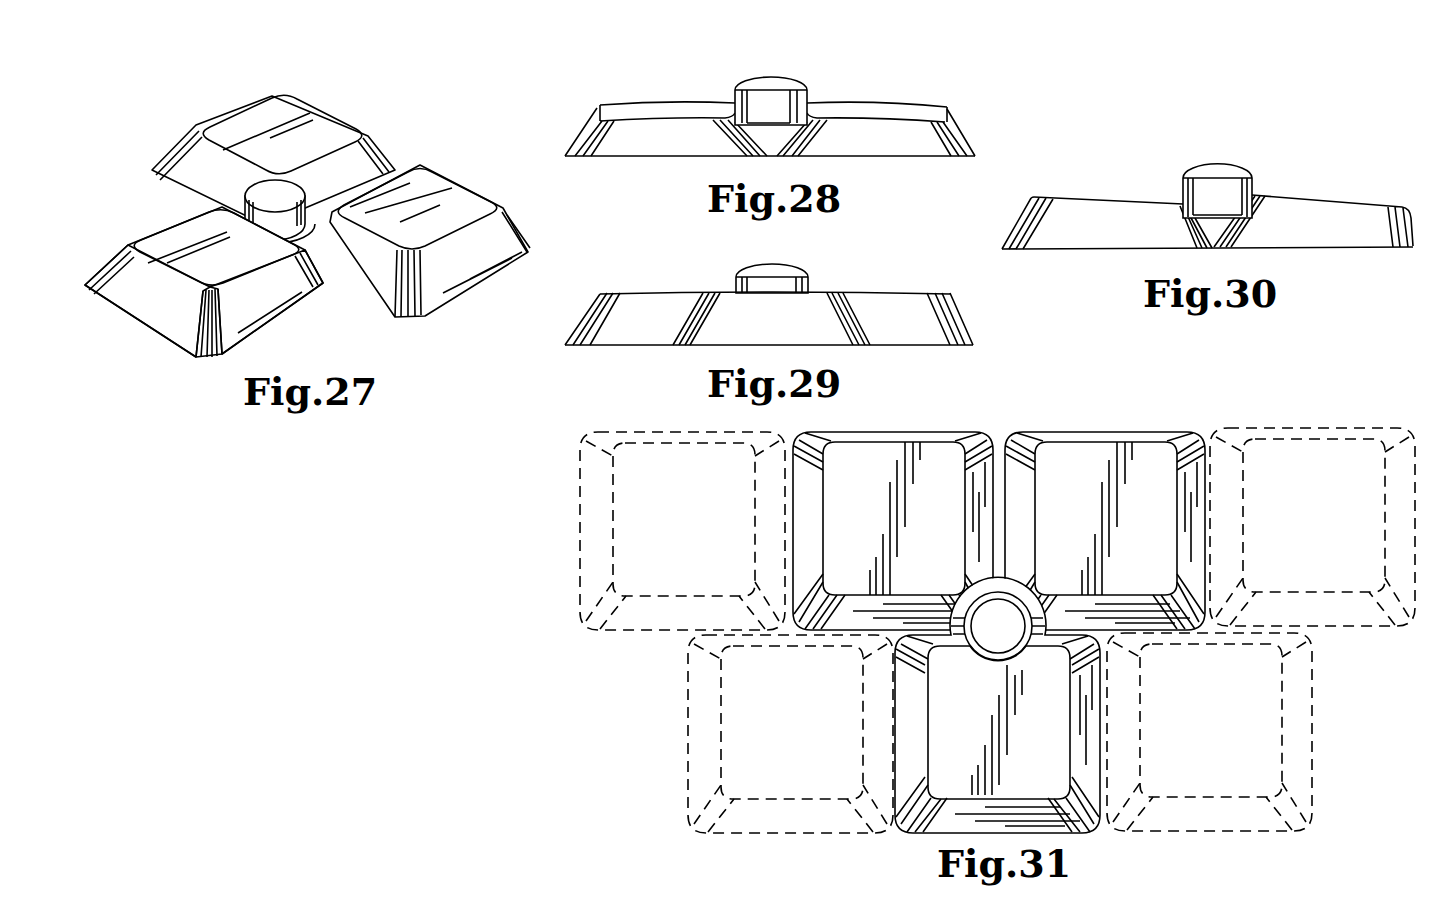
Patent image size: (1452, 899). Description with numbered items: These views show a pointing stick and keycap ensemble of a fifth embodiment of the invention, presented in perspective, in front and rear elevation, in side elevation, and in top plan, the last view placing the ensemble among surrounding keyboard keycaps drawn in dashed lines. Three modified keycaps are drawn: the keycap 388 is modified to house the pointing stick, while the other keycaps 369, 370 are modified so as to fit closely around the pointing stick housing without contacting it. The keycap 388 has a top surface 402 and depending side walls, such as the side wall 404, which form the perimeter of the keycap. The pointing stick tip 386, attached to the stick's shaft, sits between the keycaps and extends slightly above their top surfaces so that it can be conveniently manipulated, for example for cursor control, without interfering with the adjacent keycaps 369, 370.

In FIG. 27, the keycap 369 is at (332, 112).
In FIG. 28, the keycap 369 is at (915, 103).
In FIG. 29, the keycap 369 is at (650, 293).
In FIG. 31, the keycap 369 is at (922, 432).
In FIG. 27, the keycap 370 is at (457, 193).
In FIG. 28, the keycap 370 is at (655, 103).
In FIG. 29, the keycap 370 is at (908, 293).
In FIG. 31, the keycap 370 is at (1113, 432).
In FIG. 27, the pointing stick tip 386 is at (275, 211).
In FIG. 28, the pointing stick tip 386 is at (768, 78).
In FIG. 29, the pointing stick tip 386 is at (768, 265).
In FIG. 30, the pointing stick tip 386 is at (1218, 170).
In FIG. 27, the top surface 402 is at (182, 237).
In FIG. 30, the top surface 402 is at (1123, 202).
In FIG. 27, the side wall 404 is at (258, 316).
In FIG. 30, the side wall 404 is at (1047, 223).
In FIG. 27, the keycap 388 is at (152, 333).
In FIG. 30, the keycap 388 is at (1135, 248).